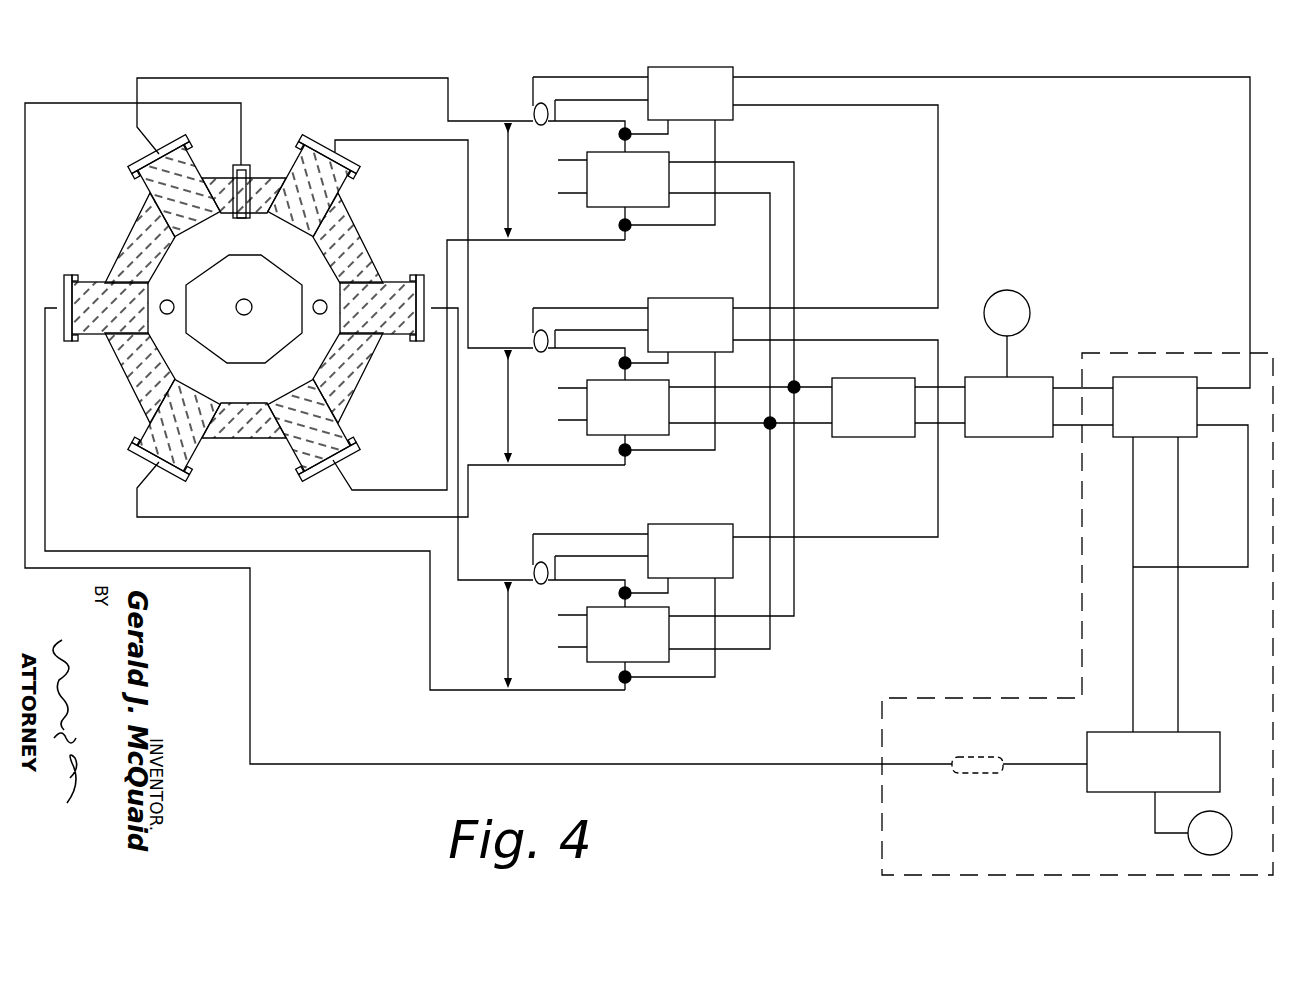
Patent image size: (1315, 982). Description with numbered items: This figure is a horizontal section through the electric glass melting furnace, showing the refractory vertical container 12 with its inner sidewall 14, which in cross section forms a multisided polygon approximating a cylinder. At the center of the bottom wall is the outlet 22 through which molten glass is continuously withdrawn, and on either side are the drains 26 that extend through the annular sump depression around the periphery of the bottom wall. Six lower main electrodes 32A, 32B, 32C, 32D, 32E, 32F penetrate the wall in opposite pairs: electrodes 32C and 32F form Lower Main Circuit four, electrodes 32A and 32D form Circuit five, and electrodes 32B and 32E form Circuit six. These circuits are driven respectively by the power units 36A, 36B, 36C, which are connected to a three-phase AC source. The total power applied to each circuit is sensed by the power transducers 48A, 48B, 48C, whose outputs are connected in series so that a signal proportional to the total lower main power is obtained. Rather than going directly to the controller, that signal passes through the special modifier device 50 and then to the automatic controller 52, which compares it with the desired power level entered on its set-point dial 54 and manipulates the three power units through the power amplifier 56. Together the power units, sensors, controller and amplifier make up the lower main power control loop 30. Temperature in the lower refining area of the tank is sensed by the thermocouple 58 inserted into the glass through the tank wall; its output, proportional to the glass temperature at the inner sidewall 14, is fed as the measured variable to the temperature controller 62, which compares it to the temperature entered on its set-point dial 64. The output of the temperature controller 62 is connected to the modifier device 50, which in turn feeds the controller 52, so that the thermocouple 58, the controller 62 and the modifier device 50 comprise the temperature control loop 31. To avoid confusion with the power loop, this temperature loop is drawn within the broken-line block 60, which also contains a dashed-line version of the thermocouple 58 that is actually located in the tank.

The vertical container 12 is at (365, 250).
The inner sidewall 14 is at (326, 257).
The outlet 22 is at (244, 315).
The drains 26 is at (313, 306).
The lower main power control loop 30 is at (800, 642).
The temperature control loop 31 is at (1135, 866).
The lower main electrode 32A is at (345, 193).
The lower main electrode 32B is at (400, 338).
The lower main electrode 32C is at (297, 450).
The lower main electrode 32D is at (140, 420).
The lower main electrode 32E is at (87, 277).
The lower main electrode 32F is at (195, 168).
The power unit 36A is at (636, 363).
The power unit 36B is at (655, 386).
The power unit 36C is at (596, 612).
The power transducer 48A is at (891, 227).
The power transducer 48B is at (735, 417).
The power transducer 48C is at (633, 551).
The modifier device 50 is at (1180, 554).
The automatic controller 52 is at (1039, 407).
The set-point dial 54 is at (1007, 333).
The power amplifier 56 is at (898, 407).
The thermocouple 58 is at (247, 222).
The broken-line block 60 is at (980, 698).
The temperature controller 62 is at (1153, 782).
The set-point dial 64 is at (1210, 833).